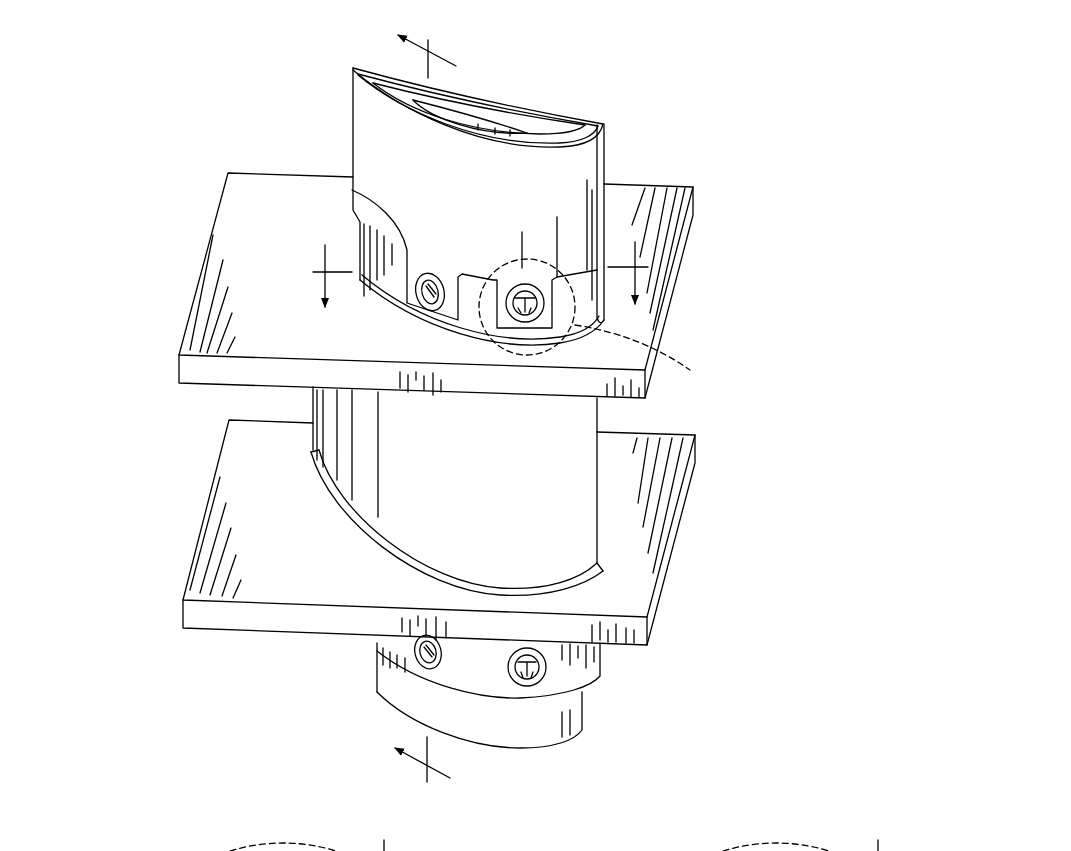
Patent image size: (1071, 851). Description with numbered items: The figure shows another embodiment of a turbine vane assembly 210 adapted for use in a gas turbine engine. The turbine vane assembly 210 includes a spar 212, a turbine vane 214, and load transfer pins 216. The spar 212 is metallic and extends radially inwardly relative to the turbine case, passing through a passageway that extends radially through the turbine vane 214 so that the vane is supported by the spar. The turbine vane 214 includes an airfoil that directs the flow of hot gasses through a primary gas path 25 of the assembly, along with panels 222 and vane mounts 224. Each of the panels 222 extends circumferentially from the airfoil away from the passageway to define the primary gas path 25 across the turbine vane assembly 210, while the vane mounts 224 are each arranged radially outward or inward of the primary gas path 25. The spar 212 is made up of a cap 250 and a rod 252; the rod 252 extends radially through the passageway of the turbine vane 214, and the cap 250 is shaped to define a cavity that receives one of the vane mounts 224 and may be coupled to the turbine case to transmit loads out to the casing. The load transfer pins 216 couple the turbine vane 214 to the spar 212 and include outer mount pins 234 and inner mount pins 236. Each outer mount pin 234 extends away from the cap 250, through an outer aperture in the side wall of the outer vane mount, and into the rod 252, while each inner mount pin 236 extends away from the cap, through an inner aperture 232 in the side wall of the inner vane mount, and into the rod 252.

The turbine vane assembly 210 is at (155, 90).
The spar 212 is at (411, 369).
The turbine vane 214 is at (170, 456).
The load transfer pins 216 is at (528, 252).
The panels 222 is at (697, 468).
The vane mounts 224 is at (357, 643).
The inner aperture 232 is at (405, 650).
The outer mount pins 234 is at (352, 190).
The inner mount pins 236 is at (427, 667).
The cap 250 is at (352, 122).
The rod 252 is at (504, 695).
The primary gas path 25 is at (163, 514).